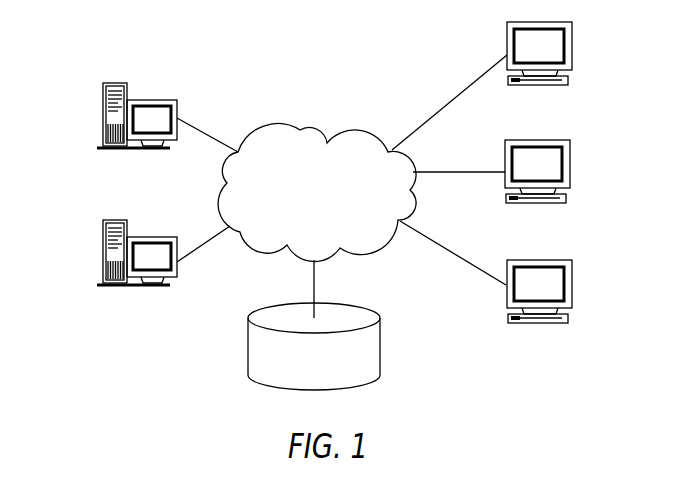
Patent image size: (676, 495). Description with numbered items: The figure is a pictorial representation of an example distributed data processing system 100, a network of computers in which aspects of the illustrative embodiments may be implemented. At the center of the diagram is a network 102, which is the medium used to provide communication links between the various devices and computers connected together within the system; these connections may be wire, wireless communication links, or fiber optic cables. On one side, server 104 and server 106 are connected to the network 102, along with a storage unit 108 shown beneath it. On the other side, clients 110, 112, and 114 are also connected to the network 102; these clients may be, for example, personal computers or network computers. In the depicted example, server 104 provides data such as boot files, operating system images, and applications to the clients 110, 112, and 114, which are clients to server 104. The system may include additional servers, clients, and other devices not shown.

The distributed data processing system 100 is at (390, 51).
The network 102 is at (300, 130).
The server 104 is at (103, 118).
The server 106 is at (103, 253).
The storage unit 108 is at (248, 343).
The client 110 is at (572, 52).
The client 112 is at (570, 172).
The client 114 is at (572, 292).